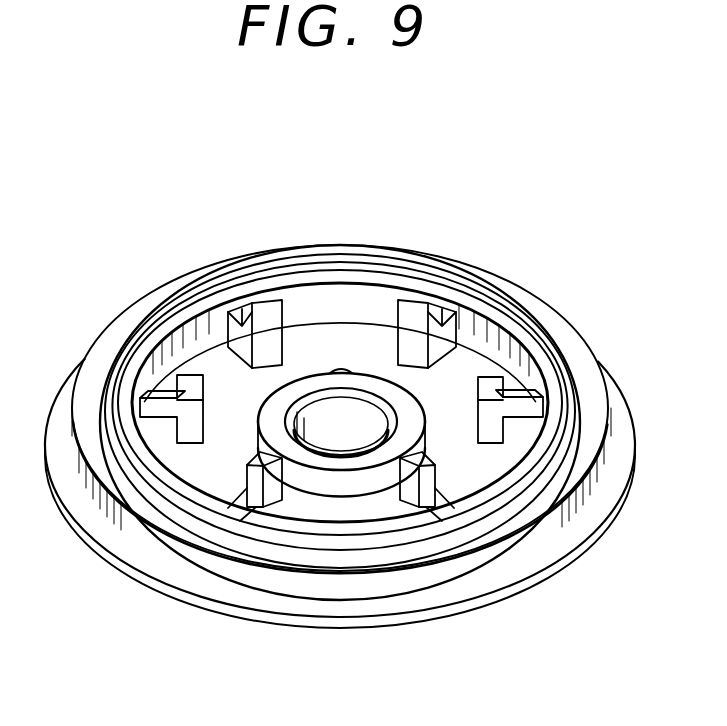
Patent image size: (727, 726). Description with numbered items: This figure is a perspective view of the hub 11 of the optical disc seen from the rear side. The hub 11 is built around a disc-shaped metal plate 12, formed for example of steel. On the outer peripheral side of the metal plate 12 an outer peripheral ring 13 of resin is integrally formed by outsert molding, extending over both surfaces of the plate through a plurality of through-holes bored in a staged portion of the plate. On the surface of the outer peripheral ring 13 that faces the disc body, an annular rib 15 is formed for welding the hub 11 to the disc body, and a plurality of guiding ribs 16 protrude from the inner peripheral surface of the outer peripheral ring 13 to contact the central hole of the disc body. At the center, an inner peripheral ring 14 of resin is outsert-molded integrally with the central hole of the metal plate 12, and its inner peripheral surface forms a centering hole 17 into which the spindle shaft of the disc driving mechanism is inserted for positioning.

The hub 11 is at (557, 580).
The metal plate 12 is at (351, 330).
The outer peripheral ring 13 is at (145, 538).
The inner peripheral ring 14 is at (272, 418).
The rib 15 is at (105, 355).
The guiding ribs 16 is at (420, 298).
The centering hole 17 is at (328, 416).